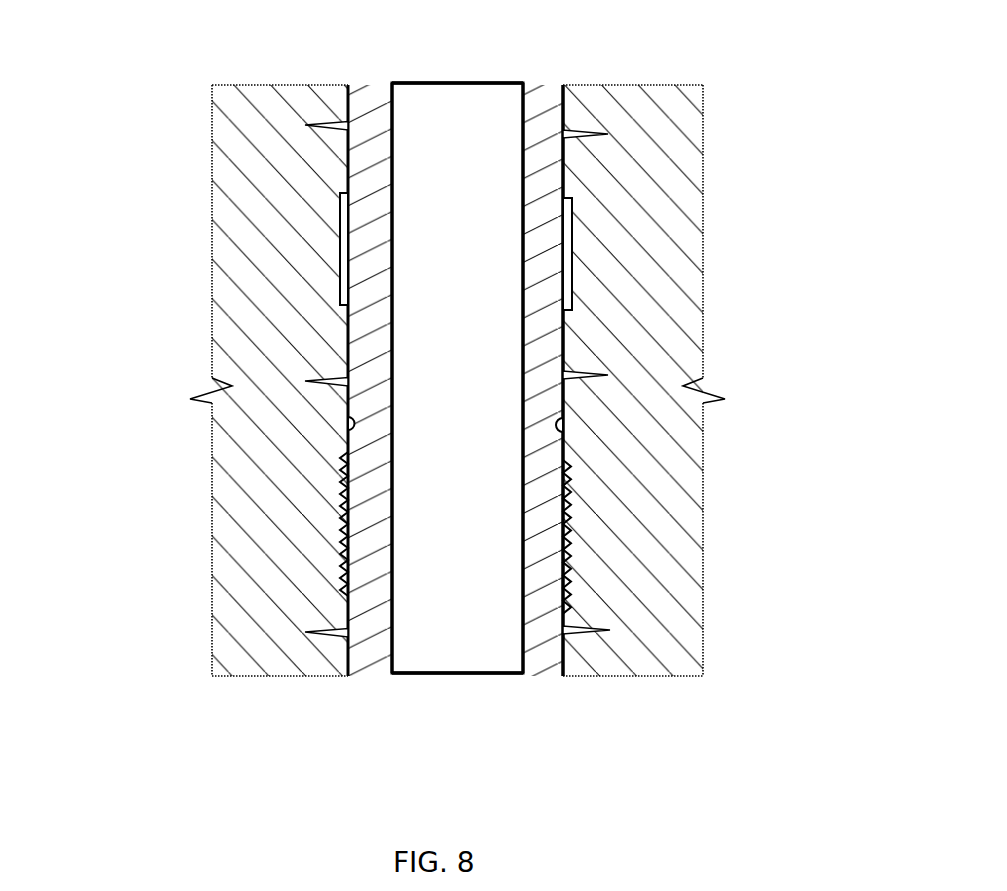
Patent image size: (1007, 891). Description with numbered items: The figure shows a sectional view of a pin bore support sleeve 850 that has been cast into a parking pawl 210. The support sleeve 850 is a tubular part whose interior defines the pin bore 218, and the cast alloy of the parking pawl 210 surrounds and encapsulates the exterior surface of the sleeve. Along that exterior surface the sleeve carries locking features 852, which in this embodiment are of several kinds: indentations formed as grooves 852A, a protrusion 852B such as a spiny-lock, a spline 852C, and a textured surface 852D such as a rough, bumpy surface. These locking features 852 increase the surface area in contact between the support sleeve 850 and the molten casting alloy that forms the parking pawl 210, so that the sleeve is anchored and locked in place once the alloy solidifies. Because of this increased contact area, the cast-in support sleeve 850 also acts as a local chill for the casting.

The parking pawl 210 is at (258, 147).
The central bore / flow passage 218 is at (424, 663).
The pin bore support sleeve 850 is at (556, 355).
The locking features 852 is at (347, 347).
The grooves 852A is at (343, 423).
The protrusion 852B is at (340, 381).
The spline 852C is at (340, 250).
The textured surface 852D is at (345, 548).